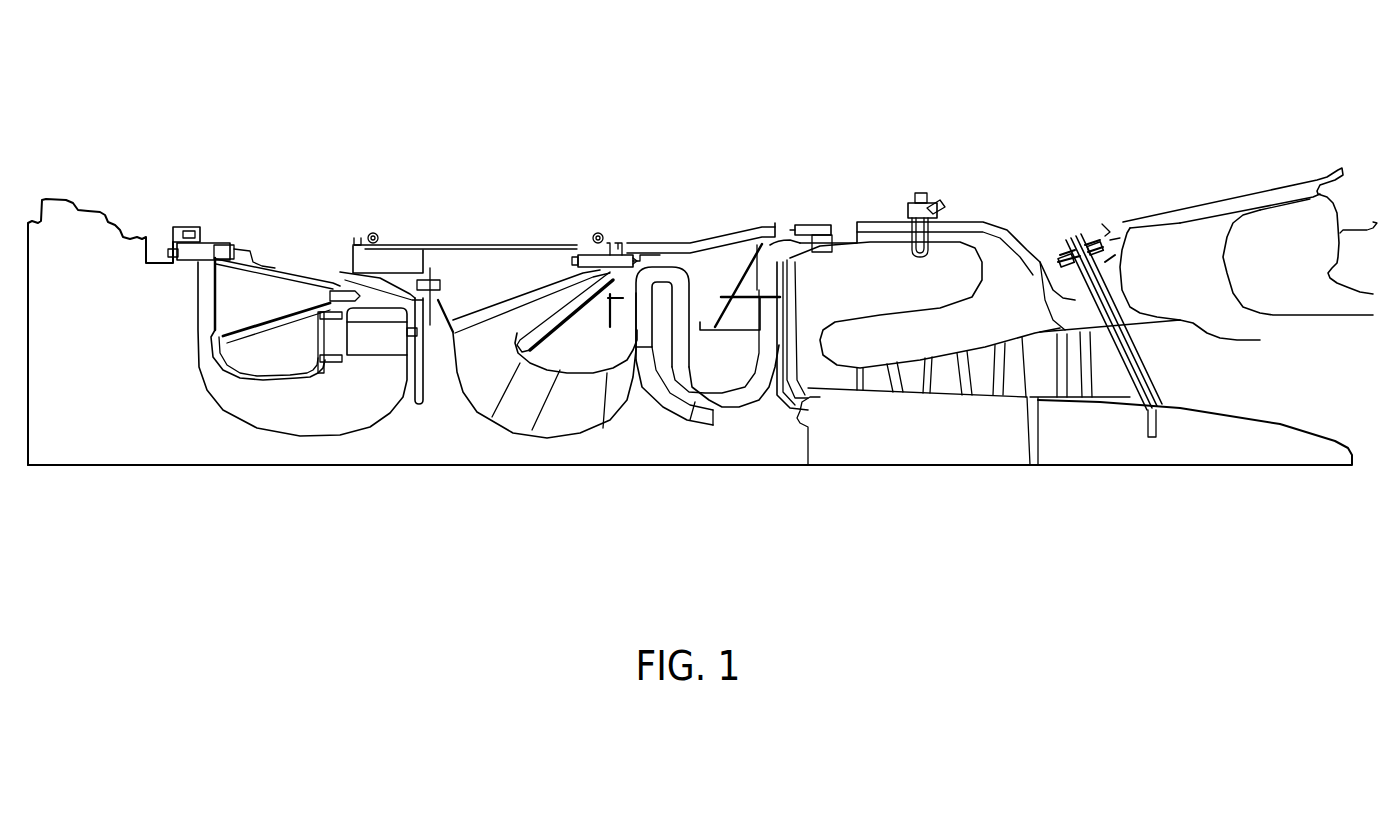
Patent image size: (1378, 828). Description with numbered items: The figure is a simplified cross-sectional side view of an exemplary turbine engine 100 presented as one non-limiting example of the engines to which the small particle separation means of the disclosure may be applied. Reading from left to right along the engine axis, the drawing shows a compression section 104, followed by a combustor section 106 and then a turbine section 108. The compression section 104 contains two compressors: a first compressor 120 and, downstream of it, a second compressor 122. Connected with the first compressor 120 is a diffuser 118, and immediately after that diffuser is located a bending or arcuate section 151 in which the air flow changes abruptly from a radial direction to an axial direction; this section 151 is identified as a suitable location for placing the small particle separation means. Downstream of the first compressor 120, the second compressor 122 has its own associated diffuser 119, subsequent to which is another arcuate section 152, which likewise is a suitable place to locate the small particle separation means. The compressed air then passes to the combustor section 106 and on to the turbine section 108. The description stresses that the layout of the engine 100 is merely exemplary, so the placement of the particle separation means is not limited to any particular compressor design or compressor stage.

The turbine engine 100 is at (133, 162).
The compression section 104 is at (458, 492).
The combustor section 106 is at (968, 193).
The turbine section 108 is at (1125, 492).
The diffuser 118 is at (637, 331).
The diffuser 119 is at (759, 345).
The first compressor 120 is at (553, 418).
The second compressor 122 is at (713, 412).
The bending or arcuate section 151 is at (662, 262).
The arcuate section 152 is at (769, 241).